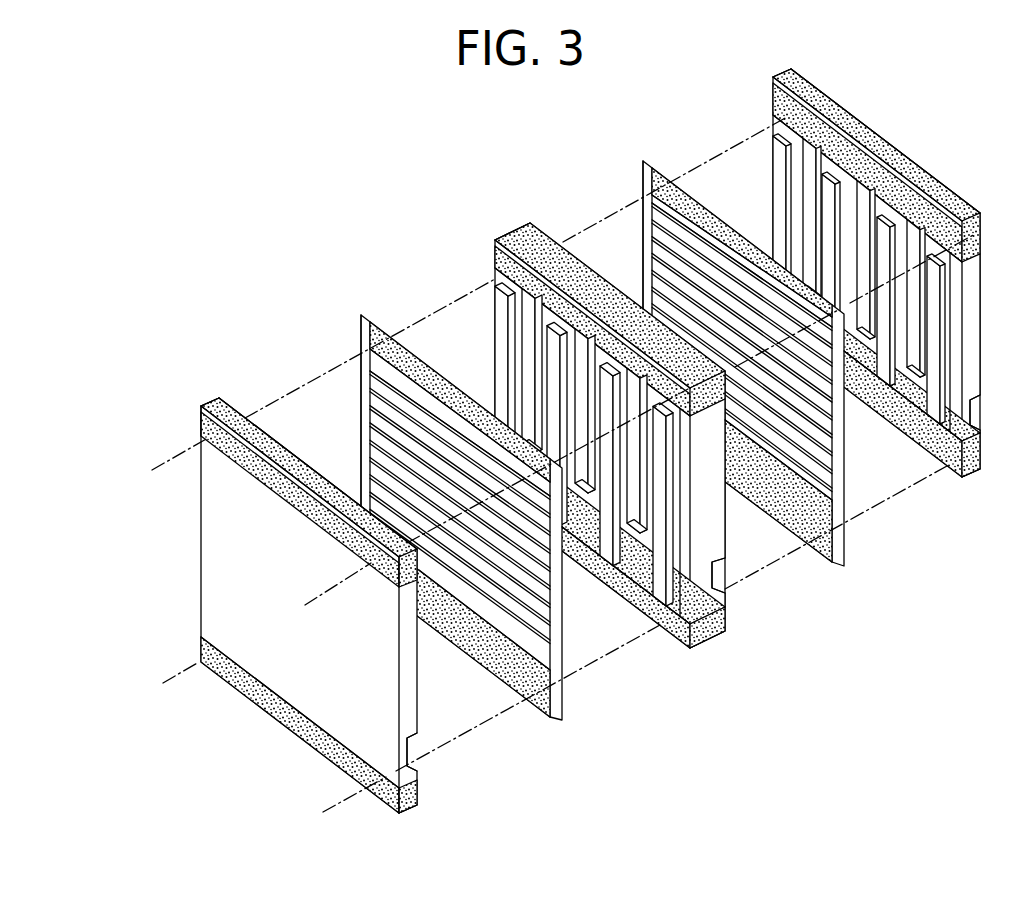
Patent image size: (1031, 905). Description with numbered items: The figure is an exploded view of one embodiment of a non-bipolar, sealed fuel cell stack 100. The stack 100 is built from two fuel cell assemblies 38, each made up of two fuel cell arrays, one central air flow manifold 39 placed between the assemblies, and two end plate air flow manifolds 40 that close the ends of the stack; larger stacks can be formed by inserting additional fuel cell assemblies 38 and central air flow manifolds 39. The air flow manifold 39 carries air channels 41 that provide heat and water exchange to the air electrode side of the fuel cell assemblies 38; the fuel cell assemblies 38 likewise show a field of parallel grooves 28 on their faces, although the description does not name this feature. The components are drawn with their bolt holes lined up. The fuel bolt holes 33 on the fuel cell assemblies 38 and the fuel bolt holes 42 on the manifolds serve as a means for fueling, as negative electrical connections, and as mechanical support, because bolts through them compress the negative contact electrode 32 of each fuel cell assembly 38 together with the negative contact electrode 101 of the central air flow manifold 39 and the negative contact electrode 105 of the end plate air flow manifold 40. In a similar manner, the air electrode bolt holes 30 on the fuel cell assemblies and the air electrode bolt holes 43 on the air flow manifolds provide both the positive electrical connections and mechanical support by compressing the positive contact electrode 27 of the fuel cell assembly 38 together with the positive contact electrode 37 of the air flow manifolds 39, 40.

The fuel cell stack 100 is at (320, 250).
The negative contact electrode 101 is at (527, 227).
The negative contact electrode 105 is at (232, 402).
The end plate air flow manifold 40 is at (607, 441).
The air electrode bolt hole 30 is at (645, 432).
The positive contact electrode 27 is at (525, 700).
The gas flow grooves 28 is at (362, 412).
The negative contact electrode 32 is at (407, 340).
The fuel bolt hole 33 is at (364, 323).
The positive contact electrode 37 is at (276, 737).
The fuel cell assembly 38 is at (570, 590).
The central air flow manifold 39 is at (740, 540).
The air channel 41 is at (425, 756).
The fuel bolt hole 42 is at (207, 414).
The air electrode bolt hole 43 is at (398, 792).